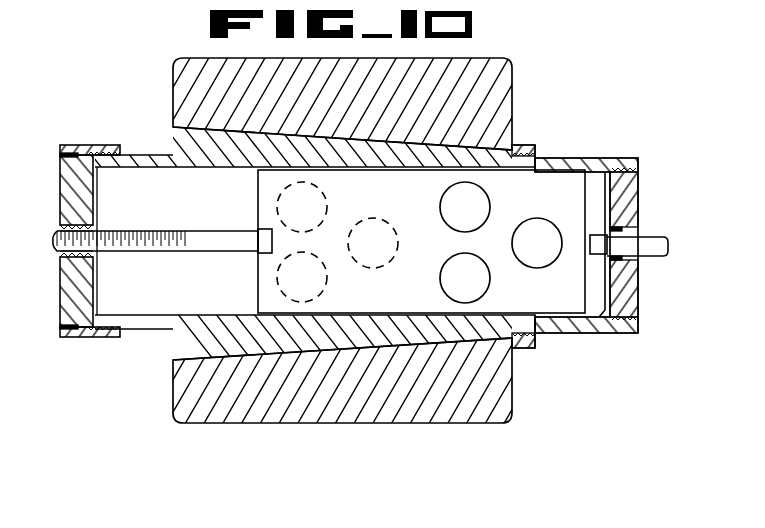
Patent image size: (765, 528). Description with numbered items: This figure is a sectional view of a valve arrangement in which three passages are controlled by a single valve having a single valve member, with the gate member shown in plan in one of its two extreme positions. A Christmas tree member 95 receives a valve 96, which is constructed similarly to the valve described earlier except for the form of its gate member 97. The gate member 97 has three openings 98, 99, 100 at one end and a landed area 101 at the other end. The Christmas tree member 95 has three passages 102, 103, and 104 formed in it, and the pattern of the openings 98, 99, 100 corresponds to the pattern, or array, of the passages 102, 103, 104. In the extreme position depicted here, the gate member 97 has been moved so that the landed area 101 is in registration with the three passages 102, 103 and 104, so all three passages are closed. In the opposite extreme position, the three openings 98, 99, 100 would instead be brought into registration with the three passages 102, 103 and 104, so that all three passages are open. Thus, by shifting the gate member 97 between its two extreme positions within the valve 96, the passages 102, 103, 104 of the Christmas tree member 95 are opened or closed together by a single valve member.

The Christmas tree member 95 is at (512, 76).
The valve 96 is at (557, 151).
The gate member 97 is at (258, 184).
The opening 98 is at (486, 196).
The opening 99 is at (487, 282).
The opening 100 is at (540, 221).
The landed area 101 is at (369, 291).
The passage 102 is at (283, 210).
The passage 103 is at (283, 277).
The passage 104 is at (389, 218).